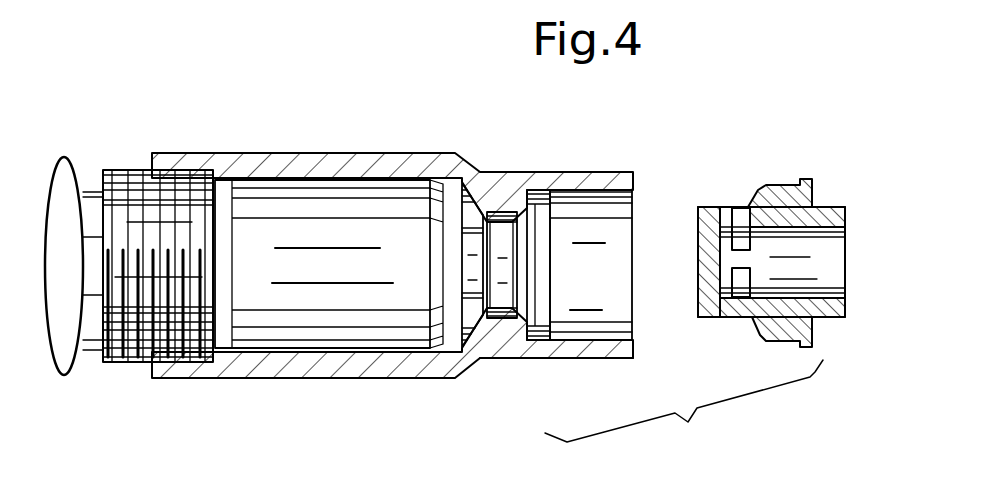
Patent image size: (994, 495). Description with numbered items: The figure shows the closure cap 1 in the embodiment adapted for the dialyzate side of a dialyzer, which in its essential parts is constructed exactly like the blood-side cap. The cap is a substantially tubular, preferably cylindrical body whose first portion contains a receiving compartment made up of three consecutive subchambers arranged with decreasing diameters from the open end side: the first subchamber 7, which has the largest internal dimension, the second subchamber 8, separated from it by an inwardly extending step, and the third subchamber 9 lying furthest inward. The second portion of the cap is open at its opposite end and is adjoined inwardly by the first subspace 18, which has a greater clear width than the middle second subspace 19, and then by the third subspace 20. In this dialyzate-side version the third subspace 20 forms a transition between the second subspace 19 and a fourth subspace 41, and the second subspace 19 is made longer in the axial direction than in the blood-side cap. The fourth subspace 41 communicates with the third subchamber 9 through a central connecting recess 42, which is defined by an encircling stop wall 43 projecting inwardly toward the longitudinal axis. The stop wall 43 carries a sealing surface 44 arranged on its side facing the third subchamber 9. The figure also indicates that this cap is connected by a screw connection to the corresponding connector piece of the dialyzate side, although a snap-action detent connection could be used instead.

The closure cap 1 is at (650, 112).
The first subchamber 7 is at (593, 218).
The second subchamber 8 is at (538, 195).
The third subchamber 9 is at (571, 356).
The first subspace 18 is at (180, 197).
The second subspace 19 is at (338, 217).
The third subspace 20 is at (440, 183).
The fourth subspace 41 is at (456, 322).
The connecting recess 42 is at (485, 212).
The stop wall 43 is at (470, 306).
The sealing surface 44 is at (503, 273).